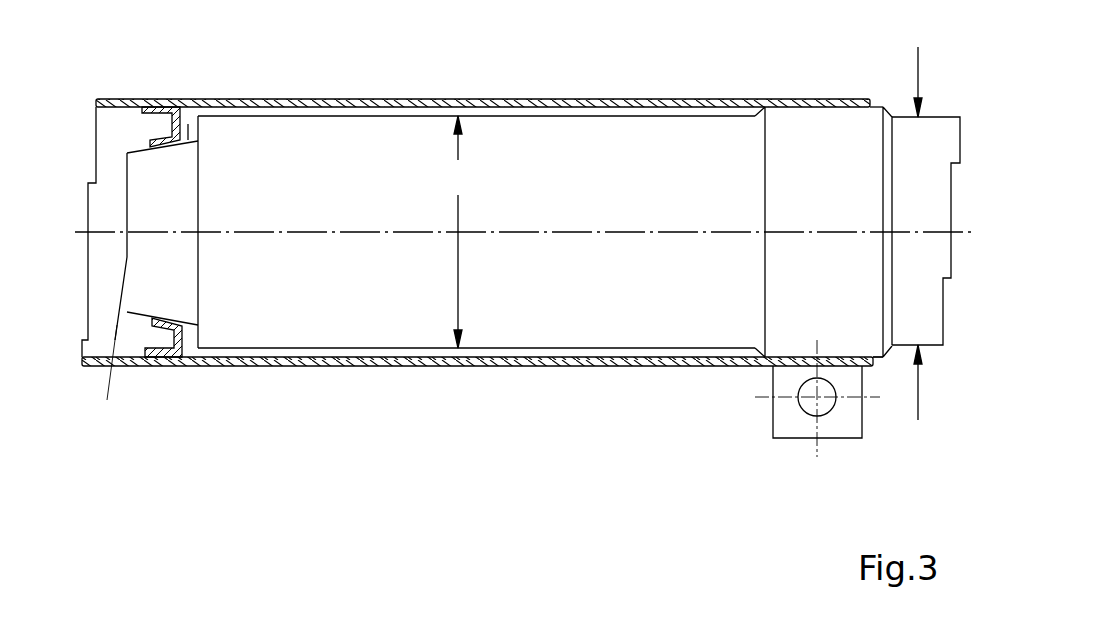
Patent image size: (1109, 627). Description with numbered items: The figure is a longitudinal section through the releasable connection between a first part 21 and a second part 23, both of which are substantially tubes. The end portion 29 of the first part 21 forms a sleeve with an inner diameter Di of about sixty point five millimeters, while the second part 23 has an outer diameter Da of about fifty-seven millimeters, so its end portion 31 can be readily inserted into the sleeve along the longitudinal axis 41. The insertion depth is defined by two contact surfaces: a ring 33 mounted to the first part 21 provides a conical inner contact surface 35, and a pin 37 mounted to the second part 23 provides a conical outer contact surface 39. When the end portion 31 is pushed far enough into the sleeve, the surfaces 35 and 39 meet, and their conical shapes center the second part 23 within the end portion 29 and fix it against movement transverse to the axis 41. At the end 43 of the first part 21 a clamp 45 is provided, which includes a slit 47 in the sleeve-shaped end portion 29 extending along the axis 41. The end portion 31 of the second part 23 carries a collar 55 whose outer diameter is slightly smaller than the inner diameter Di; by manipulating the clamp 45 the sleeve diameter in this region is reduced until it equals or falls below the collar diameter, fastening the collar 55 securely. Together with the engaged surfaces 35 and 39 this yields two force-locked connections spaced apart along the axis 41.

The first part 21 is at (482, 236).
The second part 23 is at (900, 113).
The end portion of the first part 29 is at (412, 103).
The end portion of the second part 31 is at (518, 115).
The ring 33 is at (182, 123).
The inner contact surface 35 is at (160, 150).
The pin 37 is at (112, 374).
The outer contact surface 39 is at (192, 125).
The longitudinal axis 41 is at (530, 232).
The end of the first part 43 is at (818, 98).
The clamp 45 is at (763, 455).
The slit 47 is at (650, 358).
The collar 55 is at (878, 358).
The inner diameter Di is at (454, 232).
The outer diameter Da is at (917, 223).